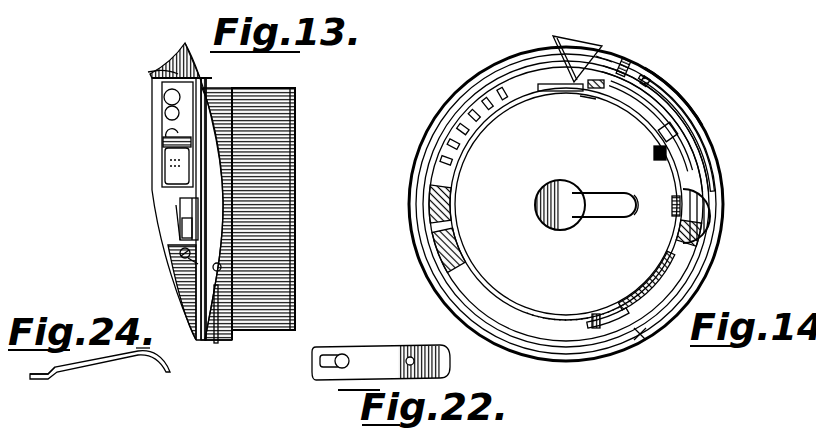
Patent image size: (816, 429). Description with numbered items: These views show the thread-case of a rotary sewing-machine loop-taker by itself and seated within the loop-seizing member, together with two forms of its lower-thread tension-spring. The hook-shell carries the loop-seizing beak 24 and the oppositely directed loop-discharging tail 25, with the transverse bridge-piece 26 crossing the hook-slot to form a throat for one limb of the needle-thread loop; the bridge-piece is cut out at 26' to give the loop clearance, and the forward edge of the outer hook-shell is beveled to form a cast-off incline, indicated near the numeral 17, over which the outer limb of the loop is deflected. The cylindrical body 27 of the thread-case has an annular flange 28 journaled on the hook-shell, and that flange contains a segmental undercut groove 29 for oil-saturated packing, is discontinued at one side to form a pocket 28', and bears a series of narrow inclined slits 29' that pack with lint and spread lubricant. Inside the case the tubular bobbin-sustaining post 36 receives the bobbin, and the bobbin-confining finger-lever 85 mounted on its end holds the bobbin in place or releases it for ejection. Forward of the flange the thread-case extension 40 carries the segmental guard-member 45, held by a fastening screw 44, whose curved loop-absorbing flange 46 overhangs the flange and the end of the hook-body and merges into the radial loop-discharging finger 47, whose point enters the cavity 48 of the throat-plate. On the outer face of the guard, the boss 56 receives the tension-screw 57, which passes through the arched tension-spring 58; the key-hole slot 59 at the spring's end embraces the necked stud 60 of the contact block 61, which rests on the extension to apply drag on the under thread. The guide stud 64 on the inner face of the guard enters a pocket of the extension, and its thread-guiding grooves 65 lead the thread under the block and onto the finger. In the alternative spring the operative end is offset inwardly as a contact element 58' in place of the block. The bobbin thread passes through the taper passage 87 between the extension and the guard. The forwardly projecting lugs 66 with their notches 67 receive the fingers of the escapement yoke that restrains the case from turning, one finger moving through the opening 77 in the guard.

In FIG. 14, the operating lever 17 is at (642, 334).
In FIG. 14, the loop-seizing beak 24 is at (478, 95).
In FIG. 14, the loop-discharging point or tail 25 is at (436, 112).
In FIG. 14, the transverse bridge-piece 26 is at (562, 69).
In FIG. 14, the cut-out of bridge-piece 26' is at (580, 63).
In FIG. 13, the body of the thread-case 27 is at (272, 330).
In FIG. 13, the annular flange 28 is at (248, 225).
In FIG. 14, the recess or pocket 28' is at (563, 107).
In FIG. 13, the segmental undercut groove 29 is at (212, 328).
In FIG. 14, the inclined slits 29' is at (482, 126).
In FIG. 14, the bobbin-sustaining post 36 is at (546, 227).
In FIG. 14, the thread-case extension 40 is at (636, 118).
In FIG. 13, the fastening screw 44 is at (190, 258).
In FIG. 13, the segmental guard-member 45 is at (184, 200).
In FIG. 14, the segmental guard-member 45 is at (650, 283).
In FIG. 13, the loop-absorbing flange 46 is at (212, 174).
In FIG. 14, the loop-absorbing flange 46 is at (660, 80).
In FIG. 13, the loop-discharging finger 47 is at (180, 52).
In FIG. 14, the loop-discharging finger 47 is at (560, 44).
In FIG. 13, the cavity 48 is at (200, 80).
In FIG. 14, the boss 56 is at (668, 152).
In FIG. 13, the tension-screw 57 is at (163, 141).
In FIG. 14, the tension-screw 57 is at (680, 136).
In FIG. 13, the tension-spring 58 is at (154, 169).
In FIG. 24, the tension-spring 58 is at (100, 368).
In FIG. 22, the tension-spring 58 is at (381, 348).
In FIG. 14, the tension-spring 58 is at (684, 132).
In FIG. 24, the contact element 58' is at (42, 386).
In FIG. 13, the key-hole slot 59 is at (165, 114).
In FIG. 22, the key-hole slot 59 is at (334, 354).
In FIG. 13, the necked stud 60 is at (155, 78).
In FIG. 14, the necked stud 60 is at (604, 78).
In FIG. 13, the contact block 61 is at (164, 97).
In FIG. 14, the contact block 61 is at (586, 100).
In FIG. 14, the guide stud or projection 64 is at (606, 62).
In FIG. 14, the thread-guiding nicks or grooves 65 is at (655, 129).
In FIG. 13, the forwardly projecting lugs 66 is at (180, 254).
In FIG. 14, the forwardly projecting lugs 66 is at (448, 238).
In FIG. 13, the notches 67 is at (178, 212).
In FIG. 14, the notches 67 is at (448, 203).
In FIG. 13, the opening 77 is at (180, 226).
In FIG. 14, the opening 77 is at (716, 218).
In FIG. 14, the bobbin-confining finger-lever 85 is at (605, 205).
In FIG. 14, the taper passage 87 is at (674, 208).